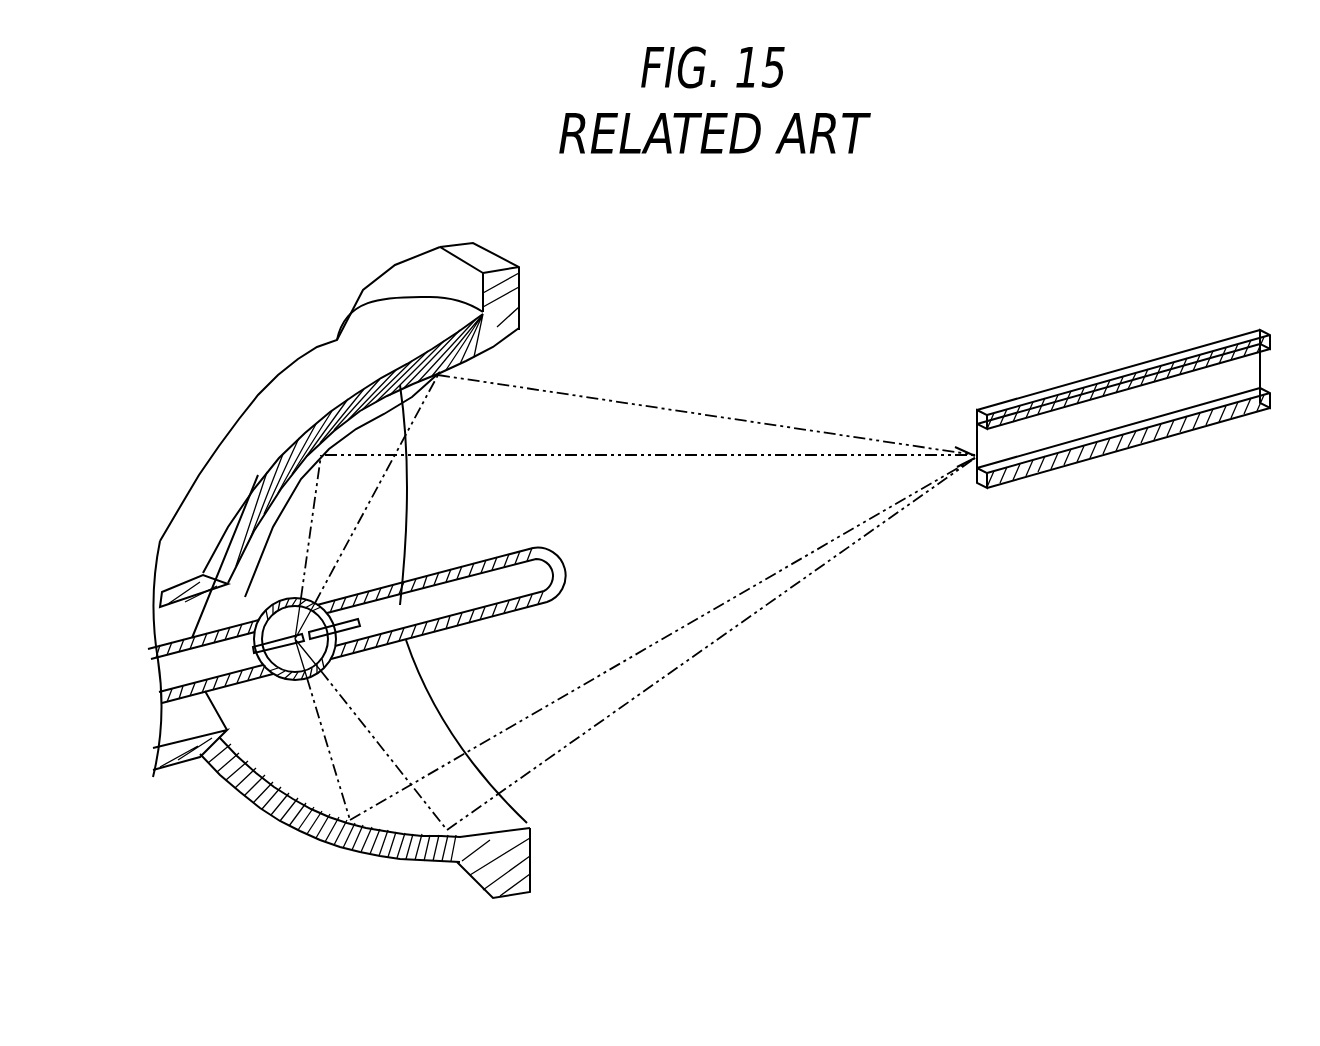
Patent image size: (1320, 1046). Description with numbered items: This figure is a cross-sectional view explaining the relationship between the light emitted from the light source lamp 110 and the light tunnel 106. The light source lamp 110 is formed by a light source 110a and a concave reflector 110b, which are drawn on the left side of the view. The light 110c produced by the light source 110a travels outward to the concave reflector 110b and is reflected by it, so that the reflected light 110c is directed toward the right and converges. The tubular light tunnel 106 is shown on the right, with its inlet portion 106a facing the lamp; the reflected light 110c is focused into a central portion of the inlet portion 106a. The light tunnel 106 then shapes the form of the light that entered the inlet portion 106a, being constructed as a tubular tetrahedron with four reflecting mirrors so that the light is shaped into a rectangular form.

The light source lamp 110 is at (193, 323).
The light source 110a is at (527, 547).
The concave reflector 110b is at (407, 697).
The light 110c is at (750, 757).
The light tunnel 106 is at (1050, 397).
The inlet portion 106a is at (963, 440).